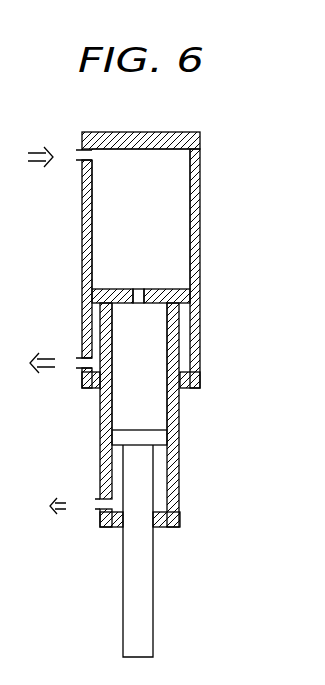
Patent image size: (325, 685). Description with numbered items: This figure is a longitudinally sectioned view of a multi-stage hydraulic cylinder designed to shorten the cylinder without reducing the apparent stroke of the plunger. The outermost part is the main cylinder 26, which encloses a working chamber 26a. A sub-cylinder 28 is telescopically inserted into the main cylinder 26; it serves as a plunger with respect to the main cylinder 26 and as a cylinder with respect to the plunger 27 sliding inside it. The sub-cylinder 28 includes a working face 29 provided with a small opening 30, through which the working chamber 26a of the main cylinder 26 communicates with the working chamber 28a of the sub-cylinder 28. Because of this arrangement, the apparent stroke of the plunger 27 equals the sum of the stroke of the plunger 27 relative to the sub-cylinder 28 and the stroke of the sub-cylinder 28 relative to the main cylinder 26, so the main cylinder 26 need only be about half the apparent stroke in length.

The main cylinder 26 is at (200, 207).
The working chamber of the main cylinder 26a is at (106, 204).
The plunger 27 is at (153, 622).
The sub-cylinder 28 is at (179, 463).
The working chamber of the sub-cylinder 28a is at (125, 402).
The working face 29 is at (110, 289).
The small opening 30 is at (142, 289).